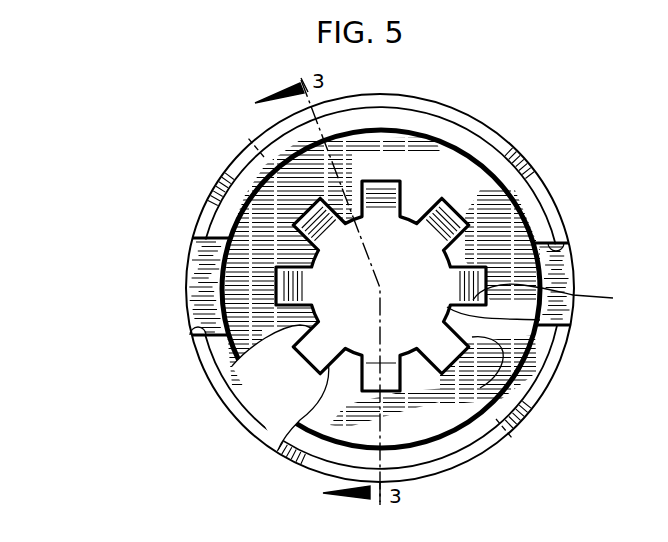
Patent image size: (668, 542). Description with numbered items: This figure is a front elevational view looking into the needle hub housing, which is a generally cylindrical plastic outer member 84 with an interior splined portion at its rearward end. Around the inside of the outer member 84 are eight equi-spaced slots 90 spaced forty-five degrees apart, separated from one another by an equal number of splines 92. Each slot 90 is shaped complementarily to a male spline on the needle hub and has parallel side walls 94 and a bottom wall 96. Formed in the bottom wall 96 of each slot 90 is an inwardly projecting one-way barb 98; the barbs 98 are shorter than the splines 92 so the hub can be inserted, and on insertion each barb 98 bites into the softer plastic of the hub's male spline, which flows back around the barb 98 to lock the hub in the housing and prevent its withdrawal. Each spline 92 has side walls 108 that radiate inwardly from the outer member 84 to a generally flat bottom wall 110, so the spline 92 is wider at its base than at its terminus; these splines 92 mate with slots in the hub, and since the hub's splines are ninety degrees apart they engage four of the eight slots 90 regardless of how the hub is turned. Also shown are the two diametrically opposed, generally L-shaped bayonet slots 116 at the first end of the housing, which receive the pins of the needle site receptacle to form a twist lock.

The outer member 84 is at (538, 179).
The slot 90 is at (437, 215).
The spline 92 is at (356, 226).
The side wall 94 is at (313, 365).
The bottom wall 96 is at (262, 380).
The barb 98 is at (273, 268).
The side wall 108 is at (470, 337).
The bottom wall 110 is at (540, 320).
The bayonet slot 116 is at (573, 246).